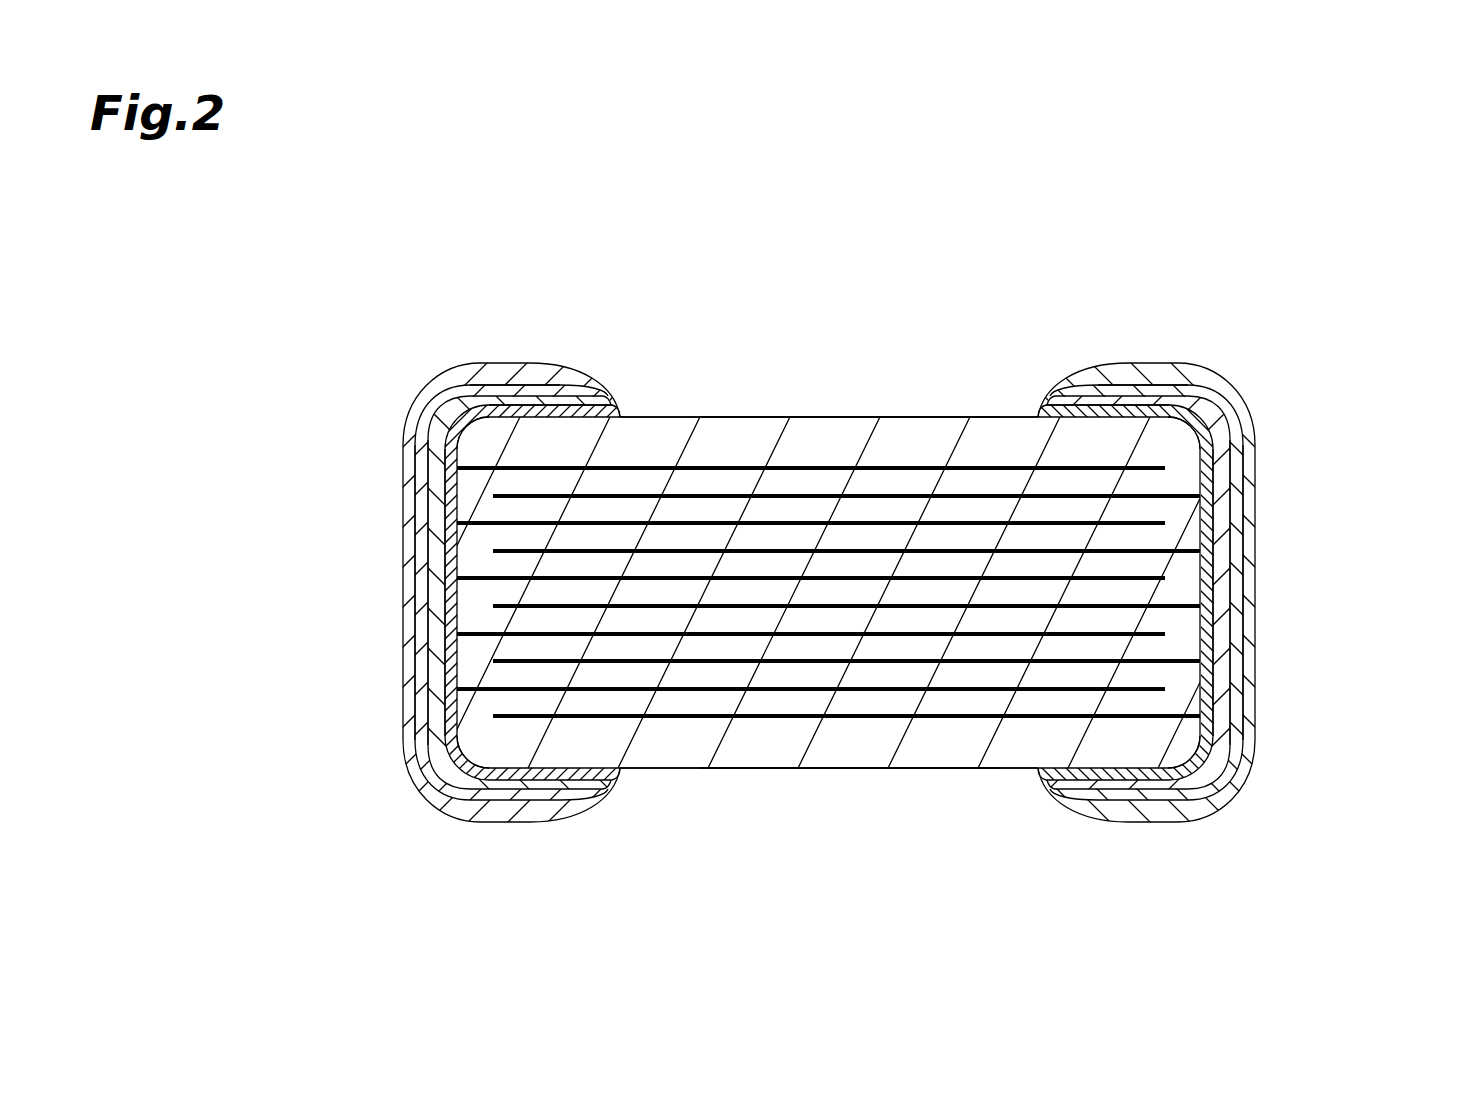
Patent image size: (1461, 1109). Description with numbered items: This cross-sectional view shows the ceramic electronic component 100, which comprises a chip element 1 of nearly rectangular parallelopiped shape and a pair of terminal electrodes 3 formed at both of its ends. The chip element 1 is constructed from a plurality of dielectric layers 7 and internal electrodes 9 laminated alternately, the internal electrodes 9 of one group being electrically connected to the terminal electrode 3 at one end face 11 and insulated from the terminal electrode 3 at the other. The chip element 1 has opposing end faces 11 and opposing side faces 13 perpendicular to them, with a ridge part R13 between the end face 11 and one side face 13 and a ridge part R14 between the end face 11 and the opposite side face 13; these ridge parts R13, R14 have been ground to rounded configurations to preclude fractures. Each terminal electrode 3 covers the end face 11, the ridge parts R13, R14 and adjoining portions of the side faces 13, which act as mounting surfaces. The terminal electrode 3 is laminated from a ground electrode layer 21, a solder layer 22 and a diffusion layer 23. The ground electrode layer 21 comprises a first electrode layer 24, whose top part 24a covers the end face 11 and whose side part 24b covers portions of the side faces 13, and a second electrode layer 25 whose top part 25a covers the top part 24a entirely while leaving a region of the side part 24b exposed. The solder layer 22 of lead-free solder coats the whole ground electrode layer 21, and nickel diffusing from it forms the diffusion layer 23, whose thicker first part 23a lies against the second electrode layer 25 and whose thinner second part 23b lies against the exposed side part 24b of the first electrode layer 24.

The ceramic electronic component 100 is at (1303, 276).
The chip element 1 is at (751, 406).
The terminal electrode 3 is at (383, 260).
The dielectric layer 7 is at (665, 430).
The internal electrode 9 is at (805, 463).
The end face 11 is at (450, 633).
The side face 13 is at (936, 417).
The ground electrode layer 21 is at (472, 306).
The solder layer 22 is at (437, 397).
The diffusion layer 23 is at (460, 402).
The first electrode layer 24 is at (547, 410).
The second electrode layer 25 is at (468, 410).
The first part of the diffusion layer 23a is at (423, 462).
The second part of the diffusion layer 23b is at (577, 397).
The top part of the first electrode layer 24a is at (450, 497).
The side part of the first electrode layer 24b is at (600, 410).
The top part of the second electrode layer 25a is at (436, 537).
The ridge part R13 is at (472, 433).
The ridge part R14 is at (463, 747).